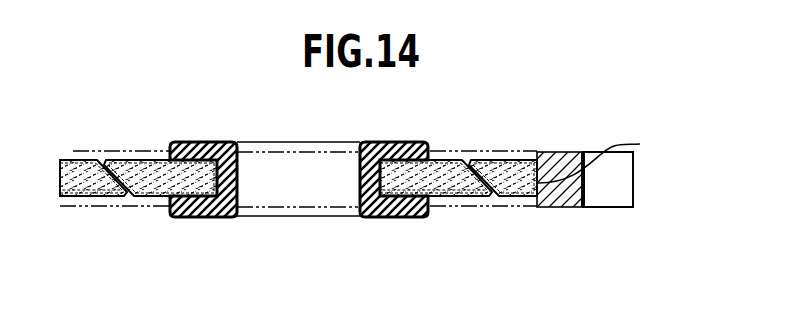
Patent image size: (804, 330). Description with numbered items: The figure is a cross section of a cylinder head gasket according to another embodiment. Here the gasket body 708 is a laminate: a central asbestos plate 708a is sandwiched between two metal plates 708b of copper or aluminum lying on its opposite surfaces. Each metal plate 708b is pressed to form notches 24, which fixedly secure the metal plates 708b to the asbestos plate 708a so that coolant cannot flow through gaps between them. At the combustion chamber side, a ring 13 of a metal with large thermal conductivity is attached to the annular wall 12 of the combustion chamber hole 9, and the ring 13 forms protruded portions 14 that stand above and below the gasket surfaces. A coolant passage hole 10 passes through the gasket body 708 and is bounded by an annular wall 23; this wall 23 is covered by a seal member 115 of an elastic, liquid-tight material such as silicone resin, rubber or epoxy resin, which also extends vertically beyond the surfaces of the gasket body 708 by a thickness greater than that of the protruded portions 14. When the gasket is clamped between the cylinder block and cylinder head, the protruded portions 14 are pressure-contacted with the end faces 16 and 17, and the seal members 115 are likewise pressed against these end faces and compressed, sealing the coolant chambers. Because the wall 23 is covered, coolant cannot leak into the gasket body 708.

The combustion chamber hole 9 is at (623, 195).
The coolant passage hole 10 is at (282, 215).
The annular wall 12 is at (600, 160).
The ring 13 is at (572, 156).
The protruded portion 14 is at (553, 152).
The end face 16 is at (83, 206).
The end face 17 is at (113, 150).
The annular wall 23 is at (359, 184).
The notch 24 is at (128, 197).
The seal member 115 is at (213, 142).
The gasket body 708 is at (517, 201).
The asbestos plate 708a is at (487, 158).
The metal plate 708b is at (440, 160).